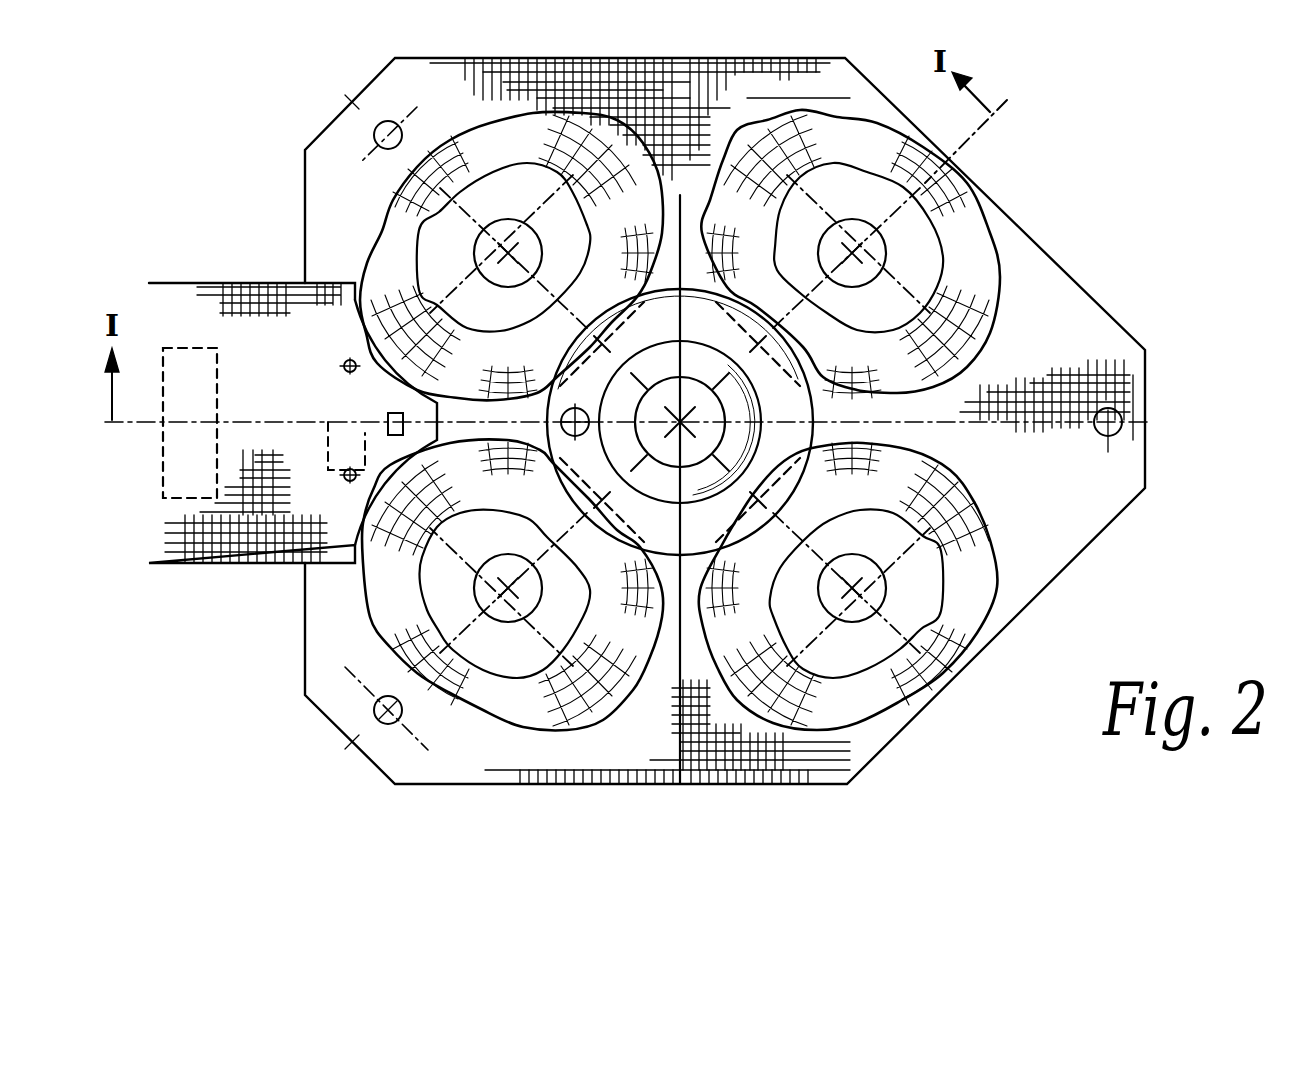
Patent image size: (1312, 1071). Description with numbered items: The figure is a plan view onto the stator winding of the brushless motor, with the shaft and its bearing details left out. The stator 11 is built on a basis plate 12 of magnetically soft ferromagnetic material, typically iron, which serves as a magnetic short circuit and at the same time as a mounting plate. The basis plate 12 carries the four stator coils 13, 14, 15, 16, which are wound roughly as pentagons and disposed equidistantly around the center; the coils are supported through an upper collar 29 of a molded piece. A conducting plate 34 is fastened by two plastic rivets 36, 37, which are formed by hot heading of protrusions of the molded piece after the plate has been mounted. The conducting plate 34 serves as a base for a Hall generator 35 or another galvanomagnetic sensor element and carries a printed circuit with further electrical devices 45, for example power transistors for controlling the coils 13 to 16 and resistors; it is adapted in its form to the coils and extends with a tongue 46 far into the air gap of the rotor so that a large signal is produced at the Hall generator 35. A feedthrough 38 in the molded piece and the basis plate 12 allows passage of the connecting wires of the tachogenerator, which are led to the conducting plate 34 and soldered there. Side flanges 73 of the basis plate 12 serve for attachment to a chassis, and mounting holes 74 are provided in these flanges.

The stator 11 is at (1025, 200).
The basis plate 12 is at (1015, 359).
The stator coil 13 is at (492, 130).
The stator coil 14 is at (738, 142).
The stator coil 15 is at (982, 548).
The stator coil 16 is at (608, 710).
The upper collar 29 is at (822, 428).
The conducting plate 34 is at (282, 298).
The Hall generator 35 is at (388, 415).
The plastic rivet 36 is at (350, 481).
The plastic rivet 37 is at (350, 360).
The feedthrough 38 is at (575, 436).
The electrical devices 45 is at (215, 395).
The tongue 46 is at (406, 422).
The side flanges 73 is at (397, 83).
The mounting holes 74 is at (375, 136).